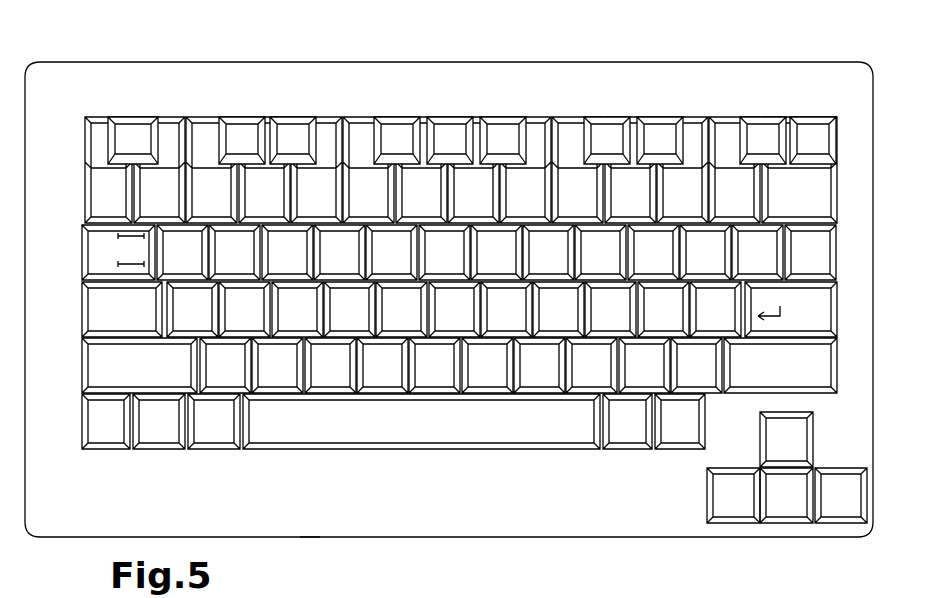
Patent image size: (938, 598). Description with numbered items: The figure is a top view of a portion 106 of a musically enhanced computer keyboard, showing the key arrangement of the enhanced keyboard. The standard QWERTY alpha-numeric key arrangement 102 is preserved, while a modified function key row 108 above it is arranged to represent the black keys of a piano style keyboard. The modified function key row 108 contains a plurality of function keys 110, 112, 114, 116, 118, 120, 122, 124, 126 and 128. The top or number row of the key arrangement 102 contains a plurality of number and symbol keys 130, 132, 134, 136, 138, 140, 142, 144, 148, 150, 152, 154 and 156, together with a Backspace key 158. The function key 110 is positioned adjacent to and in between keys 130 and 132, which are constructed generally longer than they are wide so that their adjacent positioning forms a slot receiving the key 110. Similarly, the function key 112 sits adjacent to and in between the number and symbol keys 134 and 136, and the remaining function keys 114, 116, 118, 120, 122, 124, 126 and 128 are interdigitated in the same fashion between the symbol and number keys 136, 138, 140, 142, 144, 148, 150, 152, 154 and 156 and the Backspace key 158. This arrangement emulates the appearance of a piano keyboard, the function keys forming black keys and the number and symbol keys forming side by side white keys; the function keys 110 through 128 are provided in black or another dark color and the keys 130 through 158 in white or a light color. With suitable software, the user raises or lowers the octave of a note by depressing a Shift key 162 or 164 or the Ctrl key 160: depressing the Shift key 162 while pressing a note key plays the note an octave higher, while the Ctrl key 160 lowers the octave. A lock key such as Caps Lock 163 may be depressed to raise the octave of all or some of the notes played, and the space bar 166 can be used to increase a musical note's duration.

The standard QWERTY alpha-numeric key arrangement 102 is at (76, 302).
The portion of the musically enhanced computer keyboard 106 is at (277, 534).
The modified function key row 108 is at (66, 124).
The function key 110 is at (133, 117).
The function key 112 is at (245, 117).
The function key 114 is at (302, 117).
The function key 116 is at (397, 117).
The function key 118 is at (452, 117).
The function key 120 is at (510, 117).
The function key 122 is at (613, 117).
The function key 124 is at (655, 117).
The function key 126 is at (770, 117).
The function key 128 is at (820, 117).
The number and symbol key 130 is at (84, 182).
The number and symbol key 132 is at (172, 116).
The number and symbol key 134 is at (207, 116).
The number and symbol key 136 is at (265, 116).
The number and symbol key 138 is at (317, 116).
The number and symbol key 140 is at (368, 116).
The number and symbol key 142 is at (422, 116).
The number and symbol key 144 is at (477, 116).
The number and symbol key 148 is at (540, 116).
The number and symbol key 150 is at (573, 116).
The number and symbol key 152 is at (627, 116).
The number and symbol key 154 is at (697, 116).
The number and symbol key 156 is at (725, 116).
The Backspace key 158 is at (838, 188).
The Ctrl key 160 is at (168, 450).
The Shift key 162 is at (84, 385).
The Caps Lock key 163 is at (84, 320).
The Shift key 164 is at (840, 372).
The space bar 166 is at (470, 450).